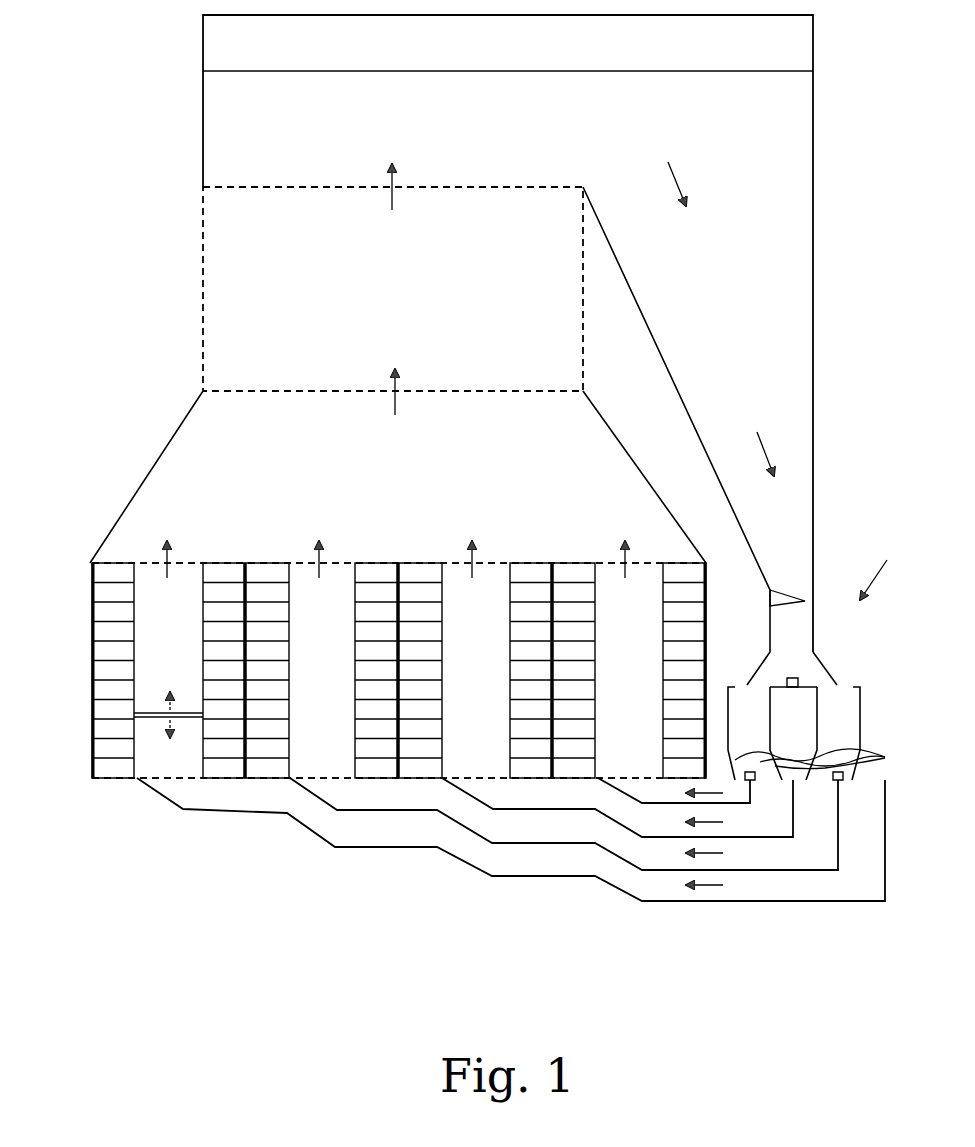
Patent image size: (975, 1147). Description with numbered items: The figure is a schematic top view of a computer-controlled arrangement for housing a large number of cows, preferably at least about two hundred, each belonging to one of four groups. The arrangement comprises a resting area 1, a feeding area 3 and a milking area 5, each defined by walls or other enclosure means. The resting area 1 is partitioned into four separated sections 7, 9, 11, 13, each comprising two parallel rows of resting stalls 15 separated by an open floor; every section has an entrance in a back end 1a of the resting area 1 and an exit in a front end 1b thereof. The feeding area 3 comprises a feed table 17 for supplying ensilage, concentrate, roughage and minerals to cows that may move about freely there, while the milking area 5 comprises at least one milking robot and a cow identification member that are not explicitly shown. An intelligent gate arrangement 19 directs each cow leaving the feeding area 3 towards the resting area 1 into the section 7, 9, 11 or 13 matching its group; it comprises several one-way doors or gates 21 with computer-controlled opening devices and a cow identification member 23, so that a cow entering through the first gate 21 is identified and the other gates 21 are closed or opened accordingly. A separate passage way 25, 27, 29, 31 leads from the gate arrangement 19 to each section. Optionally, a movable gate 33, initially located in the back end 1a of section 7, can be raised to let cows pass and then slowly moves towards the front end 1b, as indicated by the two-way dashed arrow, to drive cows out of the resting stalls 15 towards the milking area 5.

The resting area 1 is at (366, 680).
The back end of the resting area 1a is at (170, 782).
The front end of the resting area 1b is at (180, 565).
The feeding area 3 is at (203, 122).
The milking area 5 is at (203, 273).
The first section of the resting area 7 is at (228, 659).
The second section of the resting area 9 is at (380, 659).
The third section of the resting area 11 is at (533, 659).
The fourth section of the resting area 13 is at (665, 659).
The resting stalls 15 is at (120, 656).
The feed table 17 is at (813, 42).
The intelligent gate arrangement 19 is at (883, 569).
The one-way doors or gates 21 is at (764, 665).
The cow identification member 23 is at (788, 678).
The passage way 25 is at (511, 839).
The passage way 27 is at (564, 824).
The passage way 29 is at (617, 807).
The passage way 31 is at (674, 792).
The movable gate 33 is at (192, 713).